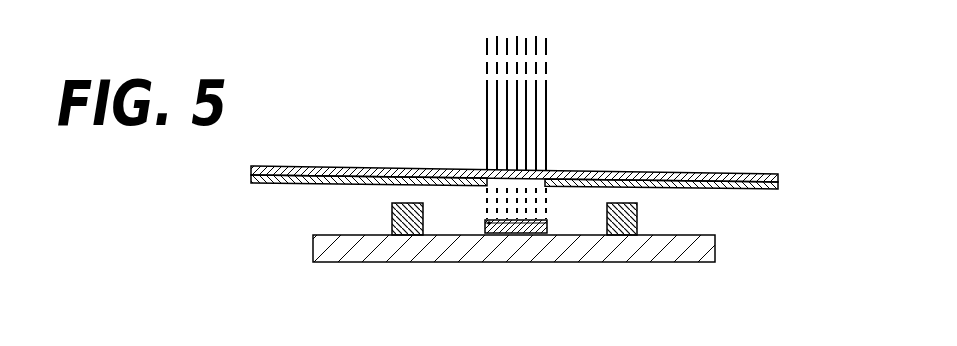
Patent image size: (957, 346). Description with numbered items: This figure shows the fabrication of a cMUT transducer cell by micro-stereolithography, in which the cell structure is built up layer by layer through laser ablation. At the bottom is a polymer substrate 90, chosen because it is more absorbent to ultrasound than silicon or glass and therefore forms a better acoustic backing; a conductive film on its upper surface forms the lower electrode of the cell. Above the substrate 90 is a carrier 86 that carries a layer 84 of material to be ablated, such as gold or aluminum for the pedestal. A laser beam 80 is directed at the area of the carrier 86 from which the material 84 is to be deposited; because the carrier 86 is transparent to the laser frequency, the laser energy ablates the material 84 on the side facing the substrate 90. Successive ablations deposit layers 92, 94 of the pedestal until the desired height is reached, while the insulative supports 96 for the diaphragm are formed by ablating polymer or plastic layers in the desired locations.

The laser beam 80 is at (473, 103).
The layer of material to be ablated 84 is at (778, 186).
The carrier 86 is at (683, 175).
The polymer substrate 90 is at (707, 255).
The pedestal layer 92 is at (547, 229).
The pedestal layer 94 is at (488, 224).
The supports for the diaphragm 96 is at (392, 219).